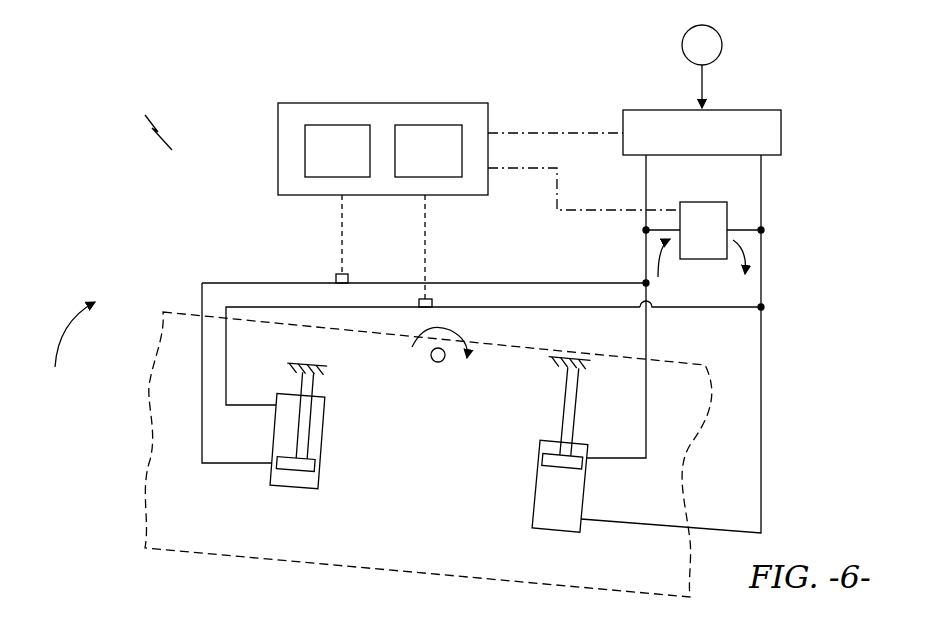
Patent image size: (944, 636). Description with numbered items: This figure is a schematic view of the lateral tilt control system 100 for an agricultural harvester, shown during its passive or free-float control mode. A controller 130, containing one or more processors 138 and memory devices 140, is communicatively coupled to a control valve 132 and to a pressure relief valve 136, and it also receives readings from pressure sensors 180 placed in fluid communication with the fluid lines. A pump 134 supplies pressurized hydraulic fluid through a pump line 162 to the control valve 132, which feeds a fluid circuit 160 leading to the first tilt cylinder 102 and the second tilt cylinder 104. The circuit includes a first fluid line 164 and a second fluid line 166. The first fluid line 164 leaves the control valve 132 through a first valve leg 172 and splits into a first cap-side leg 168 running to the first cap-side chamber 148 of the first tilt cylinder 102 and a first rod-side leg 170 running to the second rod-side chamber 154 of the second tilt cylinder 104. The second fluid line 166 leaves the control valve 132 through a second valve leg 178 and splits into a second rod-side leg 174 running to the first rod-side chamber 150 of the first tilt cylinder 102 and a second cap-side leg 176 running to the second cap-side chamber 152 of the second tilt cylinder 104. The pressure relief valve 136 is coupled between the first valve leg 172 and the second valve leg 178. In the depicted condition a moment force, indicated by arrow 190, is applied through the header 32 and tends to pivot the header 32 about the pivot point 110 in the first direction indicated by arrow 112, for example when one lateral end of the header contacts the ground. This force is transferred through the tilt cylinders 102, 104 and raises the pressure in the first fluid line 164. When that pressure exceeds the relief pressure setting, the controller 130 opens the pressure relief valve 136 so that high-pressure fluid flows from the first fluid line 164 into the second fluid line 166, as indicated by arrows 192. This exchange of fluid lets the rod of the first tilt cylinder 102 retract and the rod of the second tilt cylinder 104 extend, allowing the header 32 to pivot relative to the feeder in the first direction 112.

The lateral tilt control system 100 is at (140, 122).
The controller 130 is at (347, 102).
The processor 138 is at (322, 161).
The memory device 140 is at (413, 161).
The pump 134 is at (722, 46).
The pump line 162 is at (704, 84).
The control valve 132 is at (688, 143).
The first valve leg 172 is at (645, 195).
The second valve leg 178 is at (763, 208).
The pressure relief valve 136 is at (689, 242).
The arrows 192 is at (658, 260).
The first fluid line 164 is at (425, 351).
The first cap-side leg 168 is at (201, 452).
The first rod-side leg 170 is at (647, 421).
The fluid circuit 160 is at (503, 249).
The pressure sensors 180 is at (338, 277).
The second rod-side leg 174 is at (228, 362).
The second fluid line 166 is at (766, 357).
The second cap-side leg 176 is at (762, 433).
The arrow 190 is at (62, 335).
The header 32 is at (152, 365).
The arrow 112 is at (465, 330).
The pivot point 110 is at (440, 362).
The first tilt cylinder 102 is at (306, 453).
The second tilt cylinder 104 is at (544, 473).
The first rod-side chamber 150 is at (318, 427).
The first cap-side chamber 148 is at (305, 470).
The second cap-side chamber 152 is at (525, 529).
The second rod-side chamber 154 is at (547, 445).